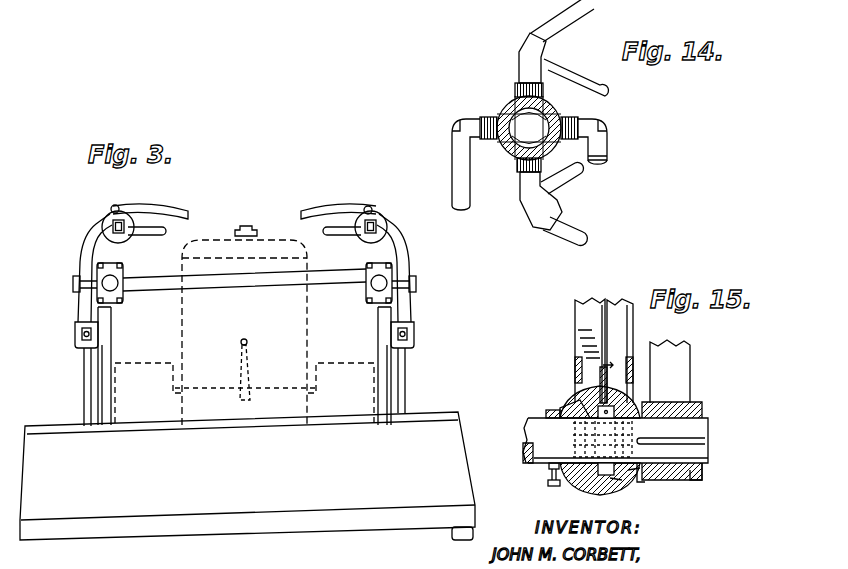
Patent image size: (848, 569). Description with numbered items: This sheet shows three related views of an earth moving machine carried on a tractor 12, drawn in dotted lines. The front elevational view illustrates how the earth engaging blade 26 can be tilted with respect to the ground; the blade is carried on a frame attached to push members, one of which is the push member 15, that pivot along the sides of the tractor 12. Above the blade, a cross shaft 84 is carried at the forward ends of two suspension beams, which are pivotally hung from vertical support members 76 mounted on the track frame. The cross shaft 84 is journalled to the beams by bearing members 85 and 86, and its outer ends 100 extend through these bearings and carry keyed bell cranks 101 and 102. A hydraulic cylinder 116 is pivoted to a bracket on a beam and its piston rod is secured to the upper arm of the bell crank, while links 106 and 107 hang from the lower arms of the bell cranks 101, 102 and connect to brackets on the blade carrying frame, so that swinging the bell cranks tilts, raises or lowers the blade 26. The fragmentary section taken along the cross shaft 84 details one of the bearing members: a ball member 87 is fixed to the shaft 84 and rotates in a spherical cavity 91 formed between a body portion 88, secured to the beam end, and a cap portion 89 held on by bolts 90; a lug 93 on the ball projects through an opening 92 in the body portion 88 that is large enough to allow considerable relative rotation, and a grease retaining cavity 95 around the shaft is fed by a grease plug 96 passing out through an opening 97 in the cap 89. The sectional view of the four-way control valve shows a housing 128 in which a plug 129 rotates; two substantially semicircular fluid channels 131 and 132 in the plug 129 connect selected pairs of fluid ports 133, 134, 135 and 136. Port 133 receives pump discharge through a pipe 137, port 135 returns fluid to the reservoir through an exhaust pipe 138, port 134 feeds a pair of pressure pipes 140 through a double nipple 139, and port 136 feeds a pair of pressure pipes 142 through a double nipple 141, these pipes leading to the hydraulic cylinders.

In FIG. 3, the tractor 12 is at (246, 226).
In FIG. 3, the earth engaging blade 26 is at (246, 508).
In FIG. 3, the vertical support members 76 is at (103, 362).
In FIG. 3, the cross shaft 84 is at (232, 284).
In FIG. 15, the cross shaft 84 is at (537, 422).
In FIG. 3, the bearing member 85 is at (114, 292).
In FIG. 3, the bearing member 86 is at (372, 283).
In FIG. 3, the outer ends of the shaft 100 is at (73, 286).
In FIG. 15, the outer ends of the shaft 100 is at (697, 430).
In FIG. 3, the bell crank 101 is at (88, 247).
In FIG. 3, the bell crank 102 is at (402, 253).
In FIG. 15, the bell crank 102 is at (678, 388).
In FIG. 3, the link 106 is at (89, 383).
In FIG. 3, the link 107 is at (407, 367).
In FIG. 3, the hydraulic cylinder 116 is at (109, 221).
In FIG. 3, the pressure pipes 140 is at (155, 206).
In FIG. 14, the pressure pipes 140 is at (573, 75).
In FIG. 3, the pressure pipes 142 is at (150, 233).
In FIG. 14, the pressure pipes 142 is at (570, 187).
In FIG. 3, the push member 15 is at (343, 277).
In FIG. 14, the housing 128 is at (507, 107).
In FIG. 14, the plug 129 is at (558, 118).
In FIG. 14, the fluid channel 131 is at (557, 107).
In FIG. 14, the fluid channel 132 is at (557, 150).
In FIG. 14, the fluid port 133 is at (485, 118).
In FIG. 14, the fluid port 134 is at (520, 90).
In FIG. 14, the fluid port 135 is at (606, 136).
In FIG. 14, the fluid port 136 is at (520, 162).
In FIG. 14, the pipe 137 is at (460, 172).
In FIG. 14, the exhaust pipe 138 is at (606, 155).
In FIG. 14, the double nipple 139 is at (530, 43).
In FIG. 14, the double nipple 141 is at (530, 207).
In FIG. 15, the body portion 88 is at (600, 395).
In FIG. 15, the cap portion 89 is at (590, 483).
In FIG. 15, the bolts 90 is at (685, 486).
In FIG. 15, the spherical cavity 91 is at (573, 410).
In FIG. 15, the opening 92 is at (617, 372).
In FIG. 15, the lug 93 is at (603, 397).
In FIG. 15, the grease retaining cavity 95 is at (600, 460).
In FIG. 15, the grease plug 96 is at (605, 485).
In FIG. 15, the opening 97 is at (625, 488).
In FIG. 15, the ball member 87 is at (650, 486).